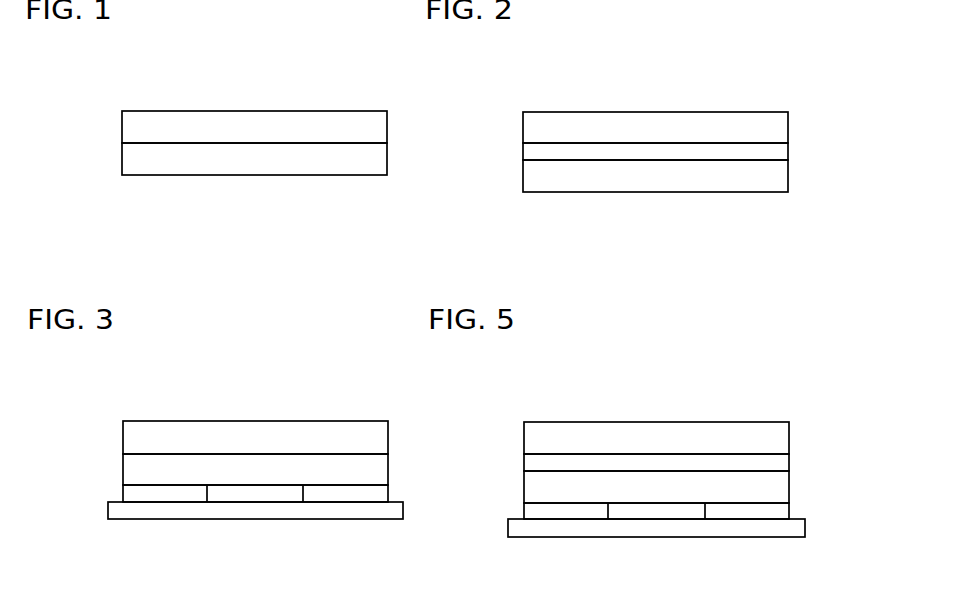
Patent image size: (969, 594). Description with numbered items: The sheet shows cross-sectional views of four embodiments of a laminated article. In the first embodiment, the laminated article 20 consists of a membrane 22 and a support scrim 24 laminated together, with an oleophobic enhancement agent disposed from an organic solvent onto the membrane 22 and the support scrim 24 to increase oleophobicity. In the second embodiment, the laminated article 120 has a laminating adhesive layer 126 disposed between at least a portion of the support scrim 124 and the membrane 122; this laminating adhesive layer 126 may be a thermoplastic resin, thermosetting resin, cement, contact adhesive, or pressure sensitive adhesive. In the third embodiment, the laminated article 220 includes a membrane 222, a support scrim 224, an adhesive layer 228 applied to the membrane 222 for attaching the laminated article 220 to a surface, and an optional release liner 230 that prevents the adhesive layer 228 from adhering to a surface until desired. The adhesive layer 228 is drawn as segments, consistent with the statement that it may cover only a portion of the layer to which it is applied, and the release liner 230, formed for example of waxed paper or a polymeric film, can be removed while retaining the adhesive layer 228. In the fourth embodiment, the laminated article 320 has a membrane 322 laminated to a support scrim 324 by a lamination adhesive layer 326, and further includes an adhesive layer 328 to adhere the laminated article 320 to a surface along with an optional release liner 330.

In FIG. 1, the laminated article 20 is at (216, 74).
In FIG. 1, the membrane 22 is at (387, 152).
In FIG. 1, the support scrim 24 is at (387, 127).
In FIG. 2, the laminated article 120 is at (637, 76).
In FIG. 2, the membrane 122 is at (788, 174).
In FIG. 2, the support scrim 124 is at (788, 122).
In FIG. 2, the laminating adhesive layer 126 is at (788, 150).
In FIG. 3, the laminated article 220 is at (232, 390).
In FIG. 3, the membrane 222 is at (388, 465).
In FIG. 3, the support scrim 224 is at (388, 436).
In FIG. 3, the adhesive layer 228 is at (388, 493).
In FIG. 3, the release liner 230 is at (403, 511).
In FIG. 5, the laminated article 320 is at (644, 383).
In FIG. 5, the membrane 322 is at (789, 490).
In FIG. 5, the support scrim 324 is at (789, 436).
In FIG. 5, the lamination adhesive layer 326 is at (789, 463).
In FIG. 5, the adhesive layer 328 is at (789, 513).
In FIG. 5, the release liner 330 is at (805, 528).